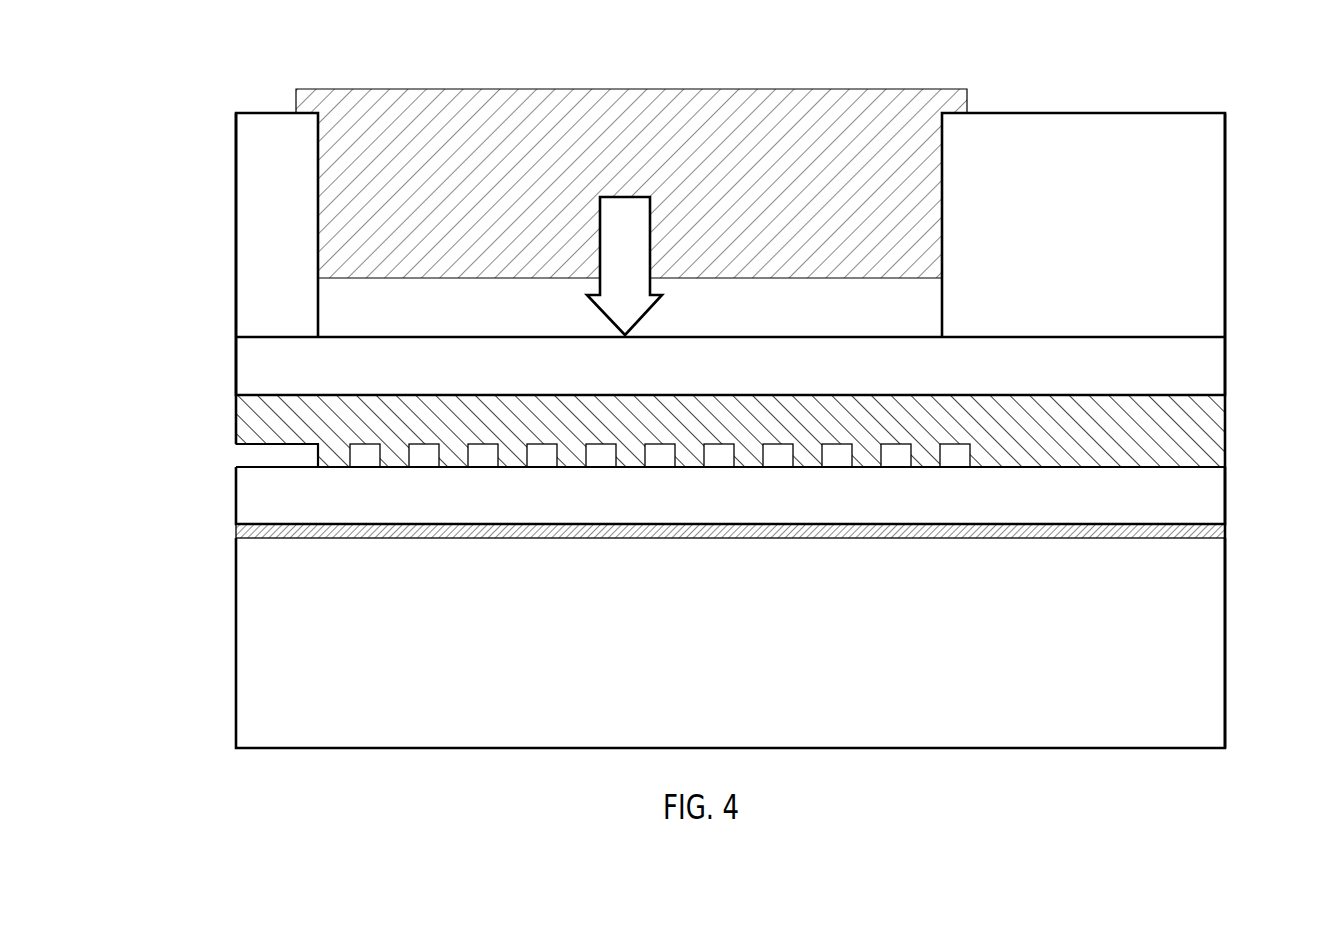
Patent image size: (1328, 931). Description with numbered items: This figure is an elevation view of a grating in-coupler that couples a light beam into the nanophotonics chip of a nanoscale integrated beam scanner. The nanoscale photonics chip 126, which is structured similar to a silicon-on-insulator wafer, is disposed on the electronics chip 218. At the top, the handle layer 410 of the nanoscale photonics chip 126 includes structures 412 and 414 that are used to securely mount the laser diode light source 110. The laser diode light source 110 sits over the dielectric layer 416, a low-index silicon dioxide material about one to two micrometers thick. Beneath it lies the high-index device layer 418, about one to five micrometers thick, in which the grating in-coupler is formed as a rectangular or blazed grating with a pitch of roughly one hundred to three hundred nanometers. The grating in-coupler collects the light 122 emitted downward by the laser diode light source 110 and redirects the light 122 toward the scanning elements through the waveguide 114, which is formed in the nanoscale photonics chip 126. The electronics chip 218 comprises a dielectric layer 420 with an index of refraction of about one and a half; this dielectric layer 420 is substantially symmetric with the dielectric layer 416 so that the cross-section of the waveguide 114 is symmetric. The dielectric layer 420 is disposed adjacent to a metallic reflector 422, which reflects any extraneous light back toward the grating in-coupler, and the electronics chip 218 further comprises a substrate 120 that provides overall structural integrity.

The laser diode light source 110 is at (797, 89).
The light 122 is at (656, 298).
The structure 414 is at (255, 113).
The structure 412 is at (1082, 113).
The handle layer 410 is at (1226, 170).
The dielectric layer 416 is at (1226, 360).
The high-index device layer 418 is at (1226, 431).
The waveguide 114 is at (1161, 432).
The substrate 120 is at (1227, 453).
The dielectric layer 420 is at (1227, 500).
The metallic reflector 422 is at (1227, 531).
The electronics chip 218 is at (218, 748).
The nanoscale photonics chip 126 is at (218, 467).